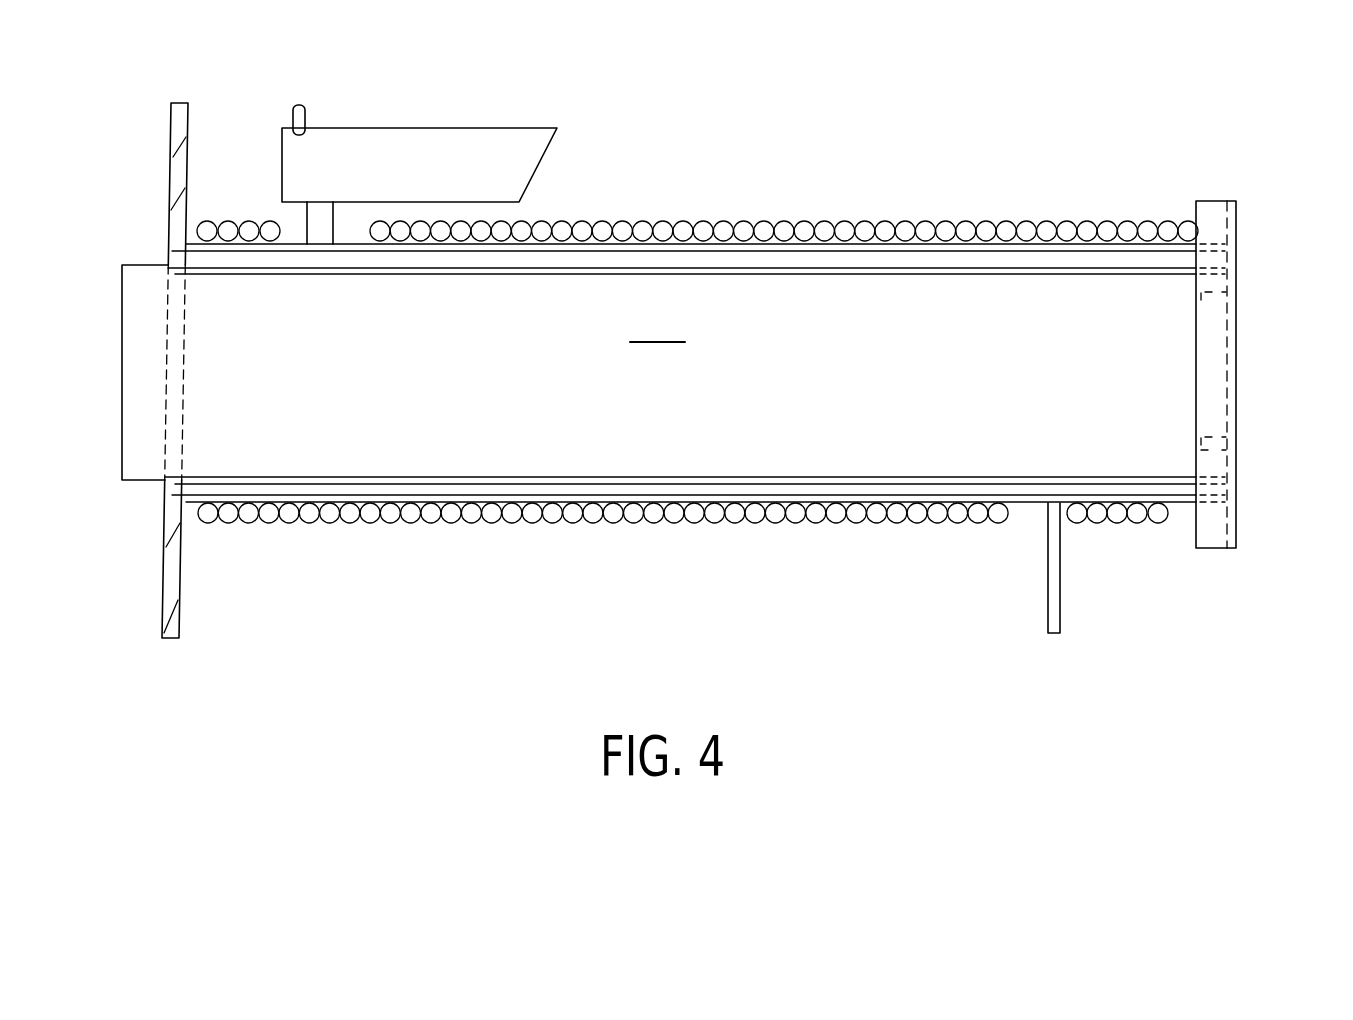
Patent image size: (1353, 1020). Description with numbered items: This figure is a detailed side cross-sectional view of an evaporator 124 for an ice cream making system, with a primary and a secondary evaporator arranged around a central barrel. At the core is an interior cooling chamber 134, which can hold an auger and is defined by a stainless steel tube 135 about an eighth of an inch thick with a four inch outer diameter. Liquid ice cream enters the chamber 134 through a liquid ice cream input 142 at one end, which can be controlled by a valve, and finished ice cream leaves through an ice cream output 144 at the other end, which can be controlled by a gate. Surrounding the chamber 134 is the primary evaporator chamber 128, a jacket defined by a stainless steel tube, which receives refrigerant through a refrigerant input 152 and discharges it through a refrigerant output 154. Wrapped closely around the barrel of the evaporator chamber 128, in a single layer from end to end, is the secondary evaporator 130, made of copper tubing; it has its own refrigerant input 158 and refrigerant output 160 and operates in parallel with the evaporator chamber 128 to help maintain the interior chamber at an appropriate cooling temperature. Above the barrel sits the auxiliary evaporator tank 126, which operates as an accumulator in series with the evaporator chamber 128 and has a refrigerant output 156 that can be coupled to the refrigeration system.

The evaporator 124 is at (718, 164).
The auxiliary evaporator tank 126 is at (539, 167).
The primary evaporator chamber 128 is at (968, 257).
The secondary evaporator 130 is at (826, 219).
The interior cooling chamber 134 is at (680, 372).
The stainless steel tube 135 is at (1180, 268).
The liquid ice cream input 142 is at (135, 388).
The ice cream output 144 is at (1237, 360).
The refrigerant input 152 is at (1048, 574).
The refrigerant output 154 is at (337, 222).
The refrigerant output 156 is at (299, 106).
The refrigerant input 158 is at (209, 519).
The refrigerant output 160 is at (1187, 226).